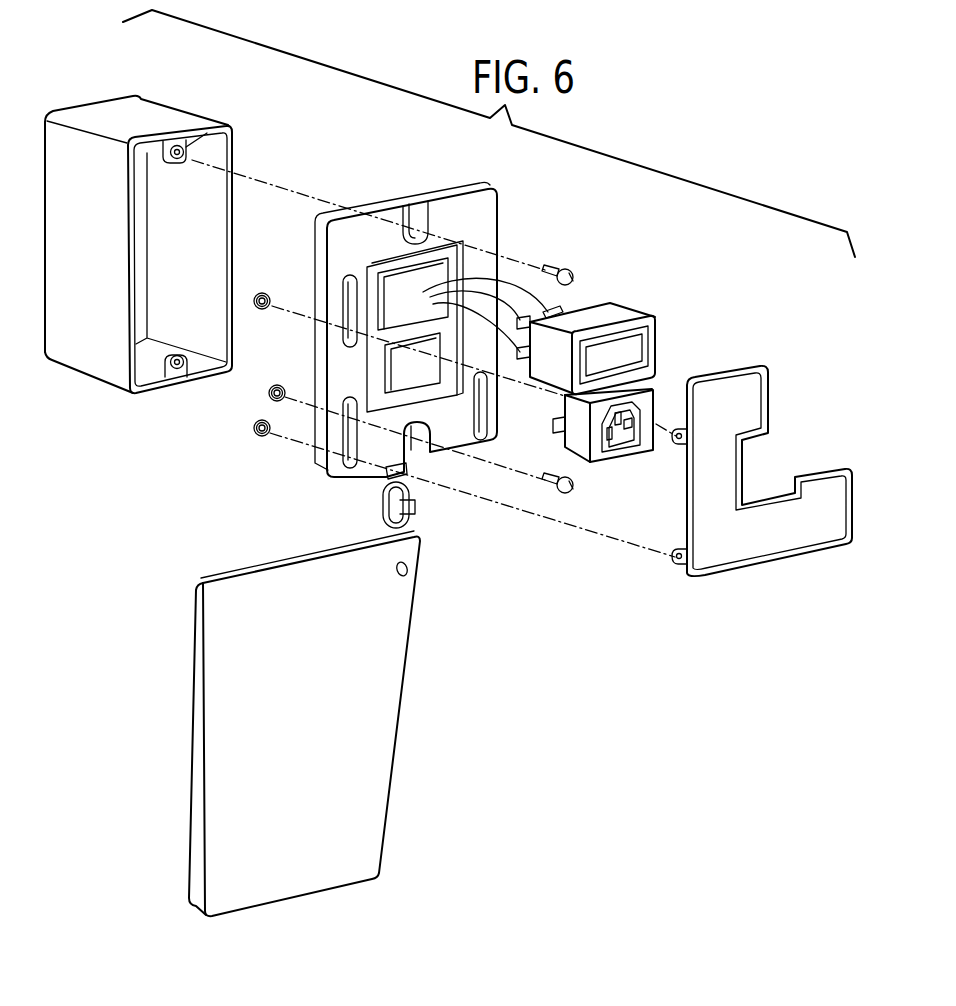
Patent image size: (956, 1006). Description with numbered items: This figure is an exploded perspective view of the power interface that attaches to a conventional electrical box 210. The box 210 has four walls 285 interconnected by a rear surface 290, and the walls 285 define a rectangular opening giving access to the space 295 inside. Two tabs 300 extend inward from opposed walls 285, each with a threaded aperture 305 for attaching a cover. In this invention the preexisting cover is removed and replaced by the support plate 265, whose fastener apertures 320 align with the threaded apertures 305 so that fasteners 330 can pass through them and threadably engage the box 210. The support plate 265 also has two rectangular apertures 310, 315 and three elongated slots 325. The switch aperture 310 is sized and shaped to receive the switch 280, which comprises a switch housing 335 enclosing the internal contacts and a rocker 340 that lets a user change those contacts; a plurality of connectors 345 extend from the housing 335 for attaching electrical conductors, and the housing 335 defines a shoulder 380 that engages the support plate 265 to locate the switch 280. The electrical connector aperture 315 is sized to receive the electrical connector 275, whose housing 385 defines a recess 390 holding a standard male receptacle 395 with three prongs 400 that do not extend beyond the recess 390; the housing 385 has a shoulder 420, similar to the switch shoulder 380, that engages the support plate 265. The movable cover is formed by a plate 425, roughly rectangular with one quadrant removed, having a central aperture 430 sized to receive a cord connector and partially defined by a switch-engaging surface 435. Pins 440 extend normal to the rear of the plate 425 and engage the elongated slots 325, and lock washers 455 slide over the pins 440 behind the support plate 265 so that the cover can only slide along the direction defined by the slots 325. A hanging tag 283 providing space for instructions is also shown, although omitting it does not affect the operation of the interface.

The box 210 is at (165, 253).
The walls 285 is at (152, 113).
The rear surface 290 is at (140, 197).
The tabs 300 is at (223, 261).
The threaded aperture 305 is at (189, 141).
The space 295 is at (188, 337).
The lock washers 455 is at (266, 293).
The support plate 265 is at (417, 336).
The fastener aperture 320 is at (409, 228).
The switch aperture 310 is at (453, 267).
The electrical connector aperture 315 is at (383, 358).
The elongated slots 325 is at (360, 278).
The connectors 345 is at (467, 315).
The fastener 330 is at (573, 274).
The switch 280 is at (615, 325).
The switch housing 335 is at (600, 312).
The shoulder 380 is at (644, 314).
The rocker 340 is at (643, 350).
The electrical connector 275 is at (650, 454).
The recess 390 is at (622, 445).
The male receptacle 395 is at (643, 456).
The prongs 400 is at (617, 422).
The housing 385 is at (573, 455).
The shoulder 420 is at (643, 385).
The plate 425 is at (762, 488).
The central aperture 430 is at (763, 468).
The switch-engaging surface 435 is at (762, 447).
The pins 440 is at (680, 440).
The hanging tag 283 is at (387, 700).